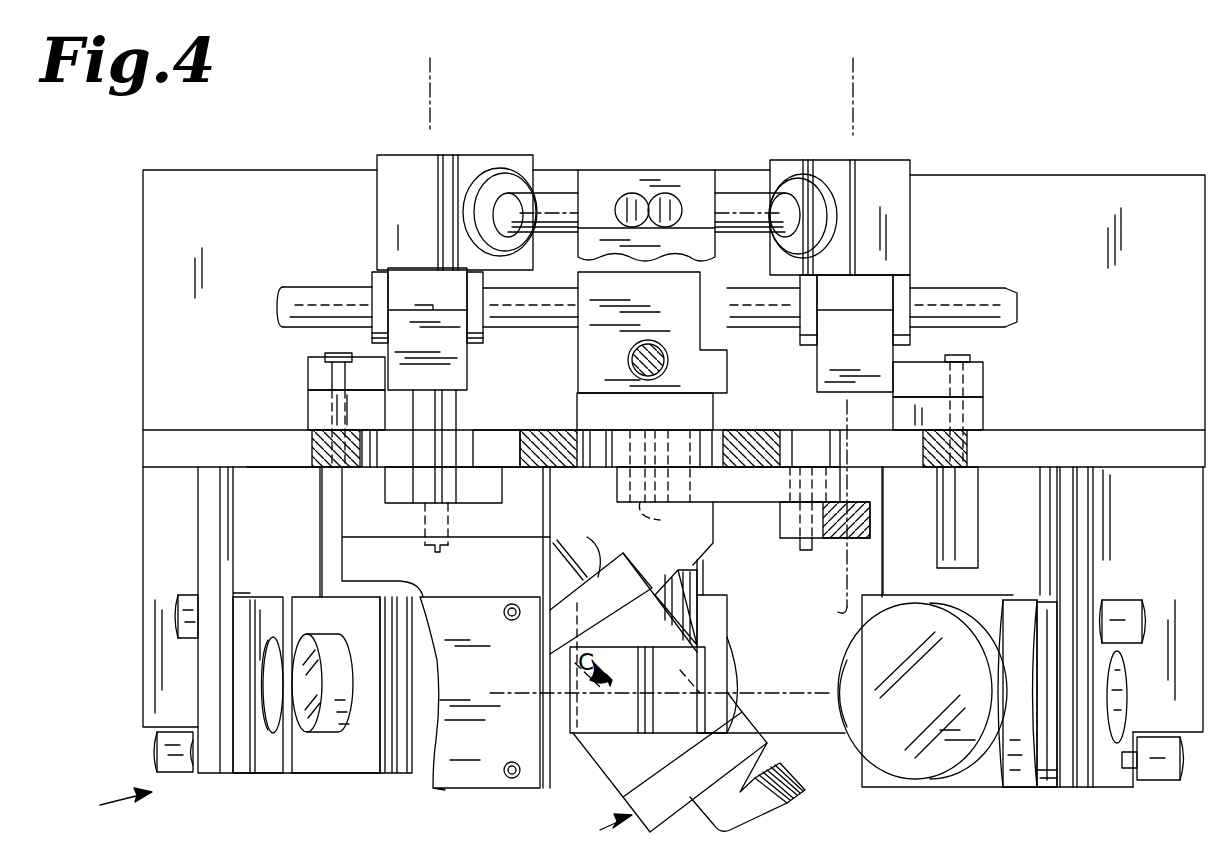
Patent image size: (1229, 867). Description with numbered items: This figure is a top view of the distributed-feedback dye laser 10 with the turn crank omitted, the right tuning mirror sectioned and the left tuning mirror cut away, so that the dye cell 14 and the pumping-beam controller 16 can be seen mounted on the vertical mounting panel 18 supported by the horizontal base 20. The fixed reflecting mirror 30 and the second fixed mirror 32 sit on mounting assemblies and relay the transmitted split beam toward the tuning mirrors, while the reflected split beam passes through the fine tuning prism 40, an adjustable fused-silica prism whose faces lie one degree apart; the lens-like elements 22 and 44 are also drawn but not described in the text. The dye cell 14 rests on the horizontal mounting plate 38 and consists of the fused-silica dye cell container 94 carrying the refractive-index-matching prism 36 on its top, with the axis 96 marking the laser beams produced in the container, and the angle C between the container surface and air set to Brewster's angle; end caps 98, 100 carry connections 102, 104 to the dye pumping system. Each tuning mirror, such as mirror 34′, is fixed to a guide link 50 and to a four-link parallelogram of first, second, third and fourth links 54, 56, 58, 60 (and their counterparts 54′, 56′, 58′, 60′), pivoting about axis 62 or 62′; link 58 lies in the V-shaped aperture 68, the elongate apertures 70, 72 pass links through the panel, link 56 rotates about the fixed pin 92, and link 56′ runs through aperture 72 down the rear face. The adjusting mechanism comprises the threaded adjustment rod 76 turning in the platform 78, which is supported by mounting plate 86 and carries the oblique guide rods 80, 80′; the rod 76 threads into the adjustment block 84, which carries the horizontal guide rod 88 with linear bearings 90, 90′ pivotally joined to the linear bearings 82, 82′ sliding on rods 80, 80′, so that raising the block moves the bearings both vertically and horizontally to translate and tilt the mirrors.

The distributed-feedback dye laser 10 is at (111, 803).
The dye cell 14 is at (601, 828).
The pumping-beam controller 16 is at (97, 543).
The vertical mounting panel 18 is at (153, 449).
The horizontal base 20 is at (248, 170).
The lens housing 22 is at (732, 653).
The fixed reflecting mirror 30 is at (916, 772).
The second fixed mirror 32 is at (1018, 768).
The tuning mirror 34′ is at (468, 622).
The refractive-index-matching prism 36 is at (705, 650).
The mounting plate 38 is at (607, 525).
The fine tuning prism 40 is at (330, 720).
The lens 44 is at (272, 735).
The guide link 50 is at (782, 522).
The first link 54 is at (983, 377).
The first link 54′ is at (316, 372).
The second link 56 is at (757, 499).
The second link 56′ is at (532, 424).
The third link 58 is at (735, 440).
The third link 58′ is at (613, 443).
The fourth link 60 is at (983, 417).
The fourth link 60′ is at (316, 407).
The axis 62 is at (860, 104).
The axis 62′ is at (430, 108).
The V-shaped aperture 68 is at (663, 442).
The elongate aperture 70 is at (897, 455).
The elongate aperture 72 is at (385, 470).
The threaded adjustment rod 76 is at (666, 366).
The platform 78 is at (612, 197).
The guide rod 80 is at (752, 202).
The guide rod 80′ is at (540, 195).
The linear bearing 82 is at (840, 170).
The linear bearing 82′ is at (455, 212).
The adjustment block 84 is at (613, 354).
The mounting plate 86 is at (638, 422).
The horizontal guide rod 88 is at (975, 300).
The linear bearing 90 is at (857, 357).
The linear bearing 90′ is at (432, 390).
The pin 92 is at (662, 517).
The dye cell container 94 is at (600, 770).
The axis 96 is at (800, 680).
The end cap 98 is at (655, 825).
The end cap 100 is at (597, 580).
The connection 102 is at (745, 812).
The connection 104 is at (598, 565).